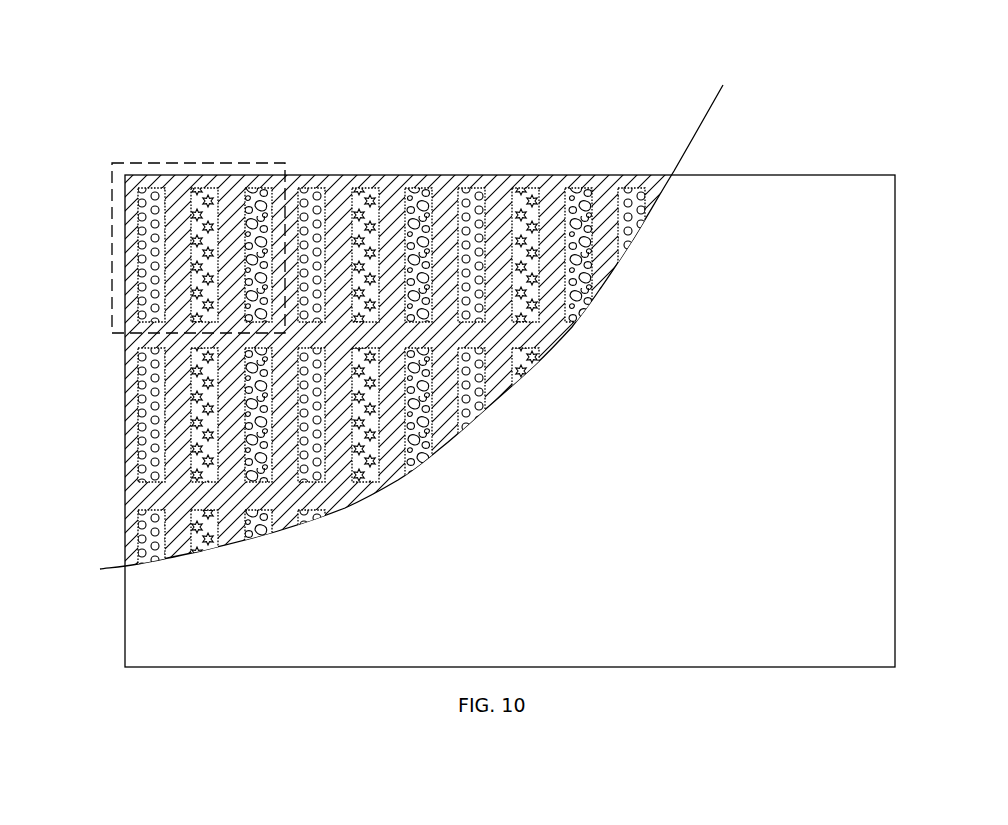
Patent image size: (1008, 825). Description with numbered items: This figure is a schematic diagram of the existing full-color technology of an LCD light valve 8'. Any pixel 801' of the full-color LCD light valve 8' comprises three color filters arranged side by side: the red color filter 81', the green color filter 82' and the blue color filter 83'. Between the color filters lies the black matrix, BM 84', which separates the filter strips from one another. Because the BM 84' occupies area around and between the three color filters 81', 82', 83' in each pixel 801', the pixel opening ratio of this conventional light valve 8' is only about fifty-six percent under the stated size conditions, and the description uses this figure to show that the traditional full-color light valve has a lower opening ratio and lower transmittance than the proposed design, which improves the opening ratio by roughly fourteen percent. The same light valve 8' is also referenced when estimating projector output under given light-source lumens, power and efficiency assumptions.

The full-color LCD light valve 8' is at (510, 349).
The red color filter 81' is at (351, 355).
The green color filter 82' is at (350, 336).
The blue color filter 83' is at (418, 355).
The BM 84' is at (497, 363).
The pixel 801' is at (153, 311).